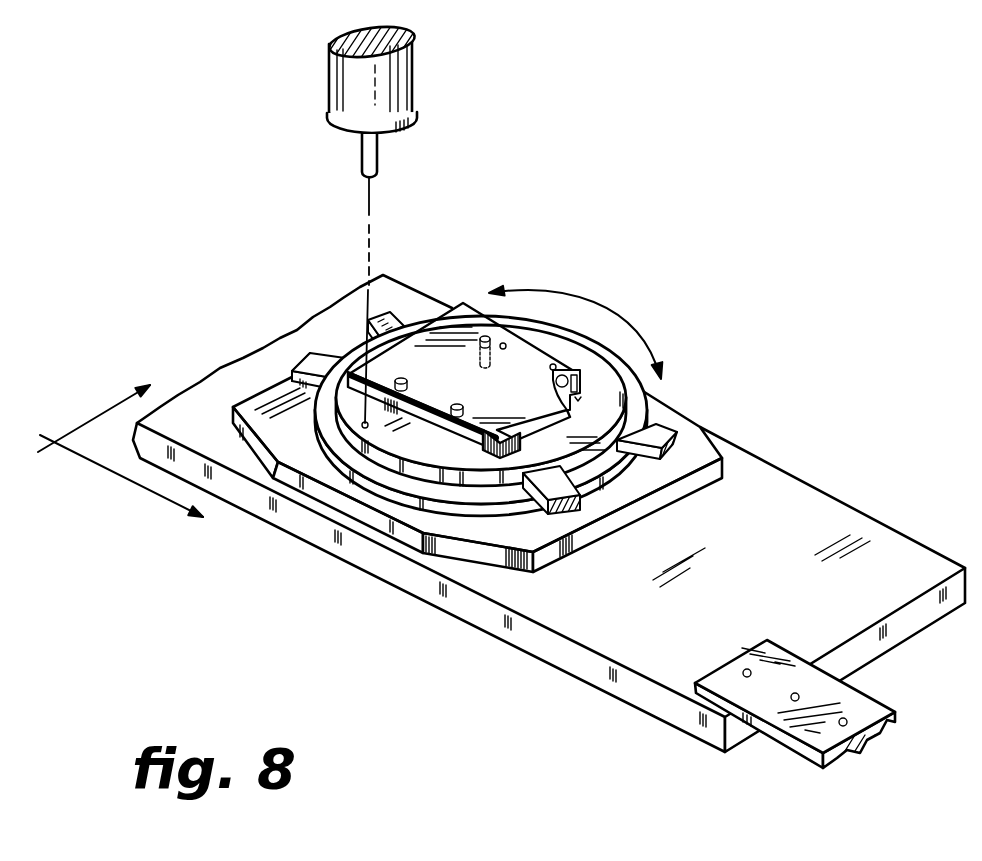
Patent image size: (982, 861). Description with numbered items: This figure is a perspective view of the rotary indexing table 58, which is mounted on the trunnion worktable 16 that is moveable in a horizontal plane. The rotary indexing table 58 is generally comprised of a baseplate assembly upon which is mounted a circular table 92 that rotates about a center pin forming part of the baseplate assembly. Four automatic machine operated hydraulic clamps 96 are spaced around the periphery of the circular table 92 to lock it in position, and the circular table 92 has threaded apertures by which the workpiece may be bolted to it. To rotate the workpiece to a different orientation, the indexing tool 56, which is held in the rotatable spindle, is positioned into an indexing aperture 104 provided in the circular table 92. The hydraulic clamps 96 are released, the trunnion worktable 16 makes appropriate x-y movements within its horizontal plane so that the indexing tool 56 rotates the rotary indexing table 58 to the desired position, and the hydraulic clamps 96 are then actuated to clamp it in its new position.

The trunnion worktable 16 is at (890, 535).
The indexing tool 56 is at (328, 92).
The rotary indexing table 58 is at (445, 528).
The circular table 92 is at (620, 401).
The hydraulic clamps 96 is at (680, 433).
The indexing aperture 104 is at (292, 375).